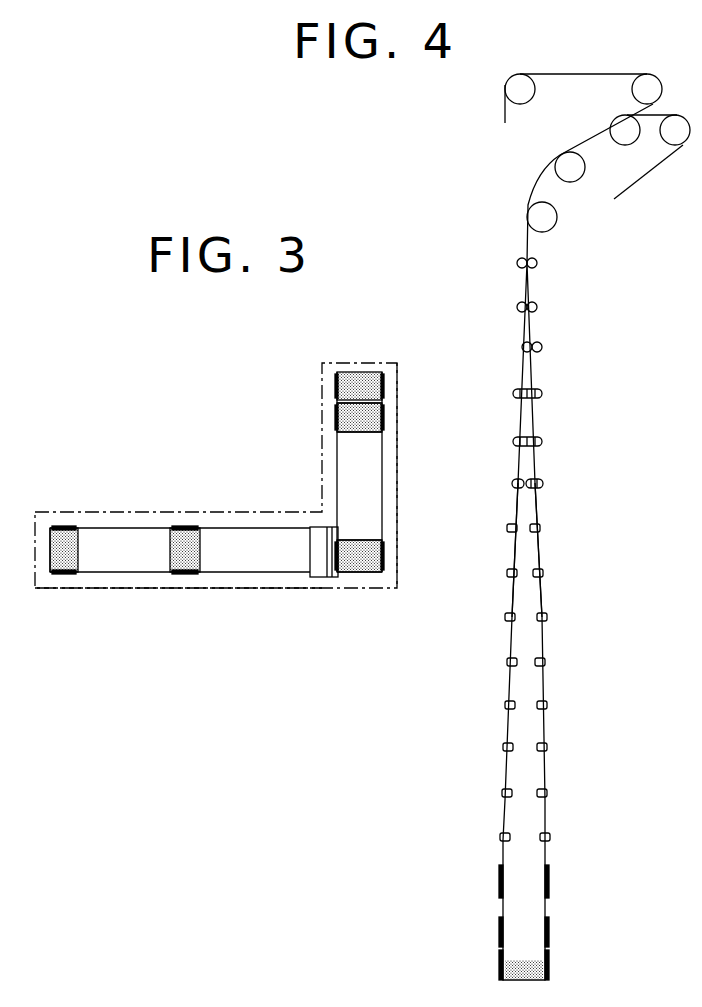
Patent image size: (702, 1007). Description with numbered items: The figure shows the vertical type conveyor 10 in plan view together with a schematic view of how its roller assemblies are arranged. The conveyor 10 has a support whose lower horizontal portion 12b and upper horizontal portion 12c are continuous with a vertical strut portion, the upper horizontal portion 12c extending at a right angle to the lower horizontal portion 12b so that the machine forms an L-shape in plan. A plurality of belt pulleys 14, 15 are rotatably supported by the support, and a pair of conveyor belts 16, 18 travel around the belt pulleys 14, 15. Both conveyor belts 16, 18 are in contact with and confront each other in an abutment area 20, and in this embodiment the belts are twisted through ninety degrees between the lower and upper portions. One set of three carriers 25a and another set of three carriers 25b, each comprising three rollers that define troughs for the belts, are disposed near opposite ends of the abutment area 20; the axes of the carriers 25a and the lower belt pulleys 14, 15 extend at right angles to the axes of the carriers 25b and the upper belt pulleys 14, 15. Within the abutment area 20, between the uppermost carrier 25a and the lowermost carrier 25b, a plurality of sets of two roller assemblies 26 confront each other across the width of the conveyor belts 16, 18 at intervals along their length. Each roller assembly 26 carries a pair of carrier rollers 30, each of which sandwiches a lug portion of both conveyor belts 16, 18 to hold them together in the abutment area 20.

In FIG. 3, the vertical type conveyor 10 is at (312, 430).
In FIG. 3, the lower horizontal portion 12b is at (275, 590).
In FIG. 3, the upper horizontal portion 12c is at (398, 437).
In FIG. 3, the belt pulley 14 is at (188, 575).
In FIG. 4, the belt pulley 14 is at (507, 75).
In FIG. 3, the belt pulley 15 is at (64, 576).
In FIG. 4, the belt pulley 15 is at (677, 116).
In FIG. 3, the conveyor belt 16 is at (245, 528).
In FIG. 4, the conveyor belt 16 is at (592, 74).
In FIG. 3, the conveyor belt 18 is at (116, 574).
In FIG. 4, the conveyor belt 18 is at (652, 176).
In FIG. 4, the abutment area 20 is at (540, 552).
In FIG. 4, the carrier 25a is at (551, 878).
In FIG. 4, the carrier 25b is at (620, 117).
In FIG. 4, the roller assembly 26 is at (505, 578).
In FIG. 4, the carrier roller 30 is at (527, 483).